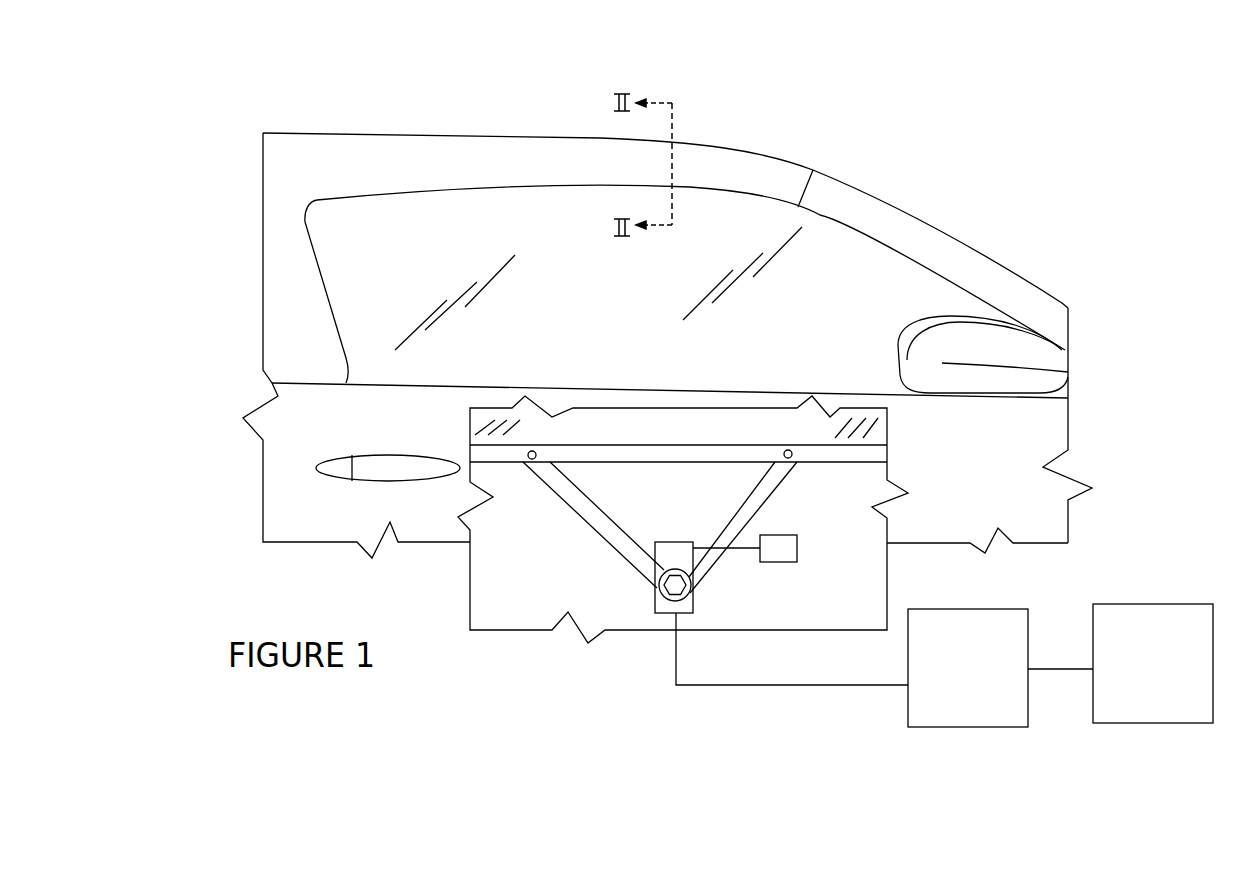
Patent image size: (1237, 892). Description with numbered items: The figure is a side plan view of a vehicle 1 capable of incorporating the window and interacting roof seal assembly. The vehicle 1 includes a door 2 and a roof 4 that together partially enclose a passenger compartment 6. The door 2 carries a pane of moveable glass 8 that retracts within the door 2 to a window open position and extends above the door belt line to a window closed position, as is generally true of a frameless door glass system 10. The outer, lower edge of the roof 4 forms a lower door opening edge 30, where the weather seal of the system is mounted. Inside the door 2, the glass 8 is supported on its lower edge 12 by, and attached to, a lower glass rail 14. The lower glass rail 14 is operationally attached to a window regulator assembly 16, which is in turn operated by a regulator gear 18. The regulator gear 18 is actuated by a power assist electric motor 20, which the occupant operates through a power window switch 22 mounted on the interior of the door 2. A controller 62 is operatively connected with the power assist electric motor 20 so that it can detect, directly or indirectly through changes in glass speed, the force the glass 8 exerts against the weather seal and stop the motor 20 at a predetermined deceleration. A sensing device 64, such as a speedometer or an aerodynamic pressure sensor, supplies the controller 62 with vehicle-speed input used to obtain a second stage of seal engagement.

The vehicle 1 is at (1115, 291).
The door 2 is at (1055, 425).
The roof 4 is at (705, 141).
The passenger compartment 6 is at (857, 272).
The glass 8 is at (505, 427).
The frameless door glass system 10 is at (367, 167).
The lower edge 12 is at (822, 447).
The lower glass rail 14 is at (588, 453).
The window regulator assembly 16 is at (628, 548).
The regulator gear 18 is at (680, 598).
The power assist electric motor 20 is at (663, 612).
The power window switch 22 is at (778, 552).
The lower door opening edge 30 is at (485, 189).
The controller 62 is at (917, 697).
The sensing device 64 is at (1155, 710).